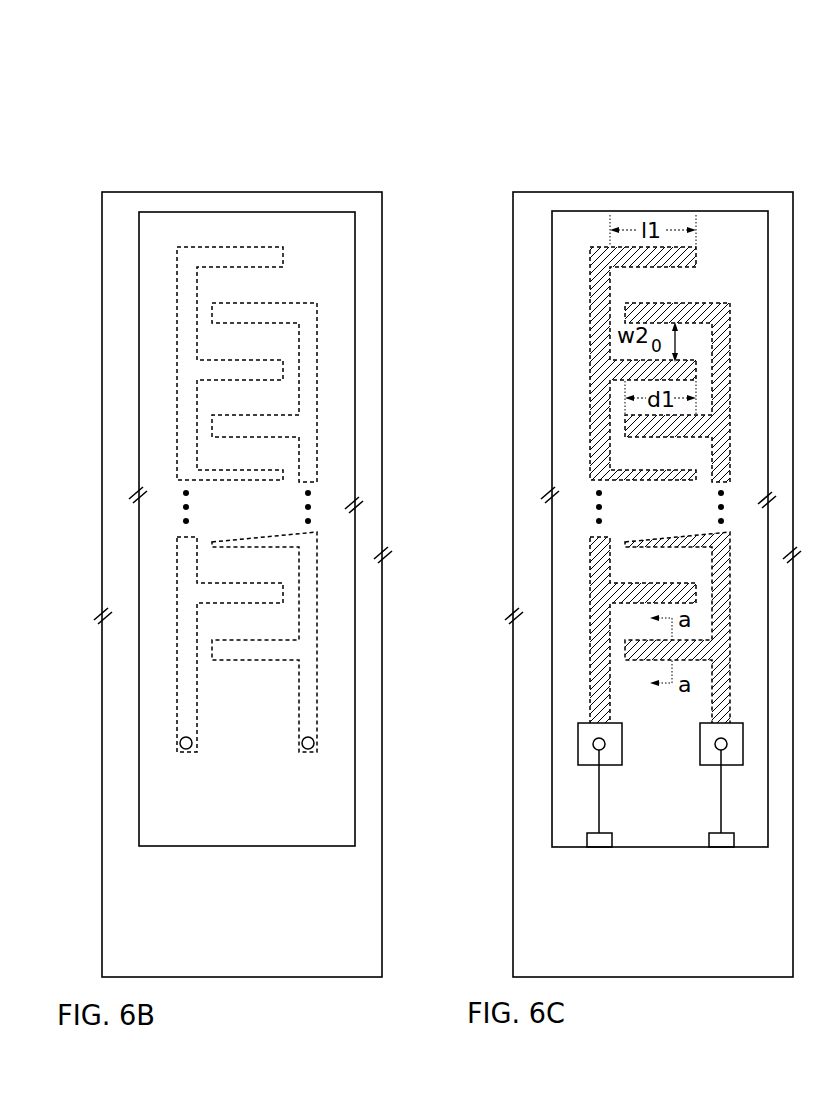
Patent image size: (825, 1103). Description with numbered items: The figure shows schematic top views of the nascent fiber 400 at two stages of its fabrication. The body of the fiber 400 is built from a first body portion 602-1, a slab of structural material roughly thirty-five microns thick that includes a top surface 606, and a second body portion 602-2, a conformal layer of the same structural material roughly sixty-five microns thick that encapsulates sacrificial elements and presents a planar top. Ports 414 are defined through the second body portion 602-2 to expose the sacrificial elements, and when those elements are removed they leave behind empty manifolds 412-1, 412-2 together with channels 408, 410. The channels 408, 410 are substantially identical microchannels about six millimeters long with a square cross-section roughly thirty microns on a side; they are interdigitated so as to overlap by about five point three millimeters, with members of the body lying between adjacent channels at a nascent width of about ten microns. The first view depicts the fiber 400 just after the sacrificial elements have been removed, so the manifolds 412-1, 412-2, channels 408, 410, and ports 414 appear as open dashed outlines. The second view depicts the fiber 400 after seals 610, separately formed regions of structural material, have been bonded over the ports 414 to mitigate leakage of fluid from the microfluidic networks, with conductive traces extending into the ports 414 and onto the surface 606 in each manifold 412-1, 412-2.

In FIG. 6B, the fiber 400 is at (77, 242).
In FIG. 6C, the fiber 400 is at (487, 206).
In FIG. 6B, the first body portion 602-1 is at (19, 157).
In FIG. 6B, the second body portion 602-2 is at (310, 248).
In FIG. 6B, the channels 408 is at (151, 499).
In FIG. 6B, the channels 410 is at (341, 494).
In FIG. 6B, the manifold 412-1 is at (187, 653).
In FIG. 6B, the manifold 412-2 is at (308, 345).
In FIG. 6B, the top surface 606 is at (332, 734).
In FIG. 6B, the ports 414 is at (186, 751).
In FIG. 6C, the seals 610 is at (686, 794).